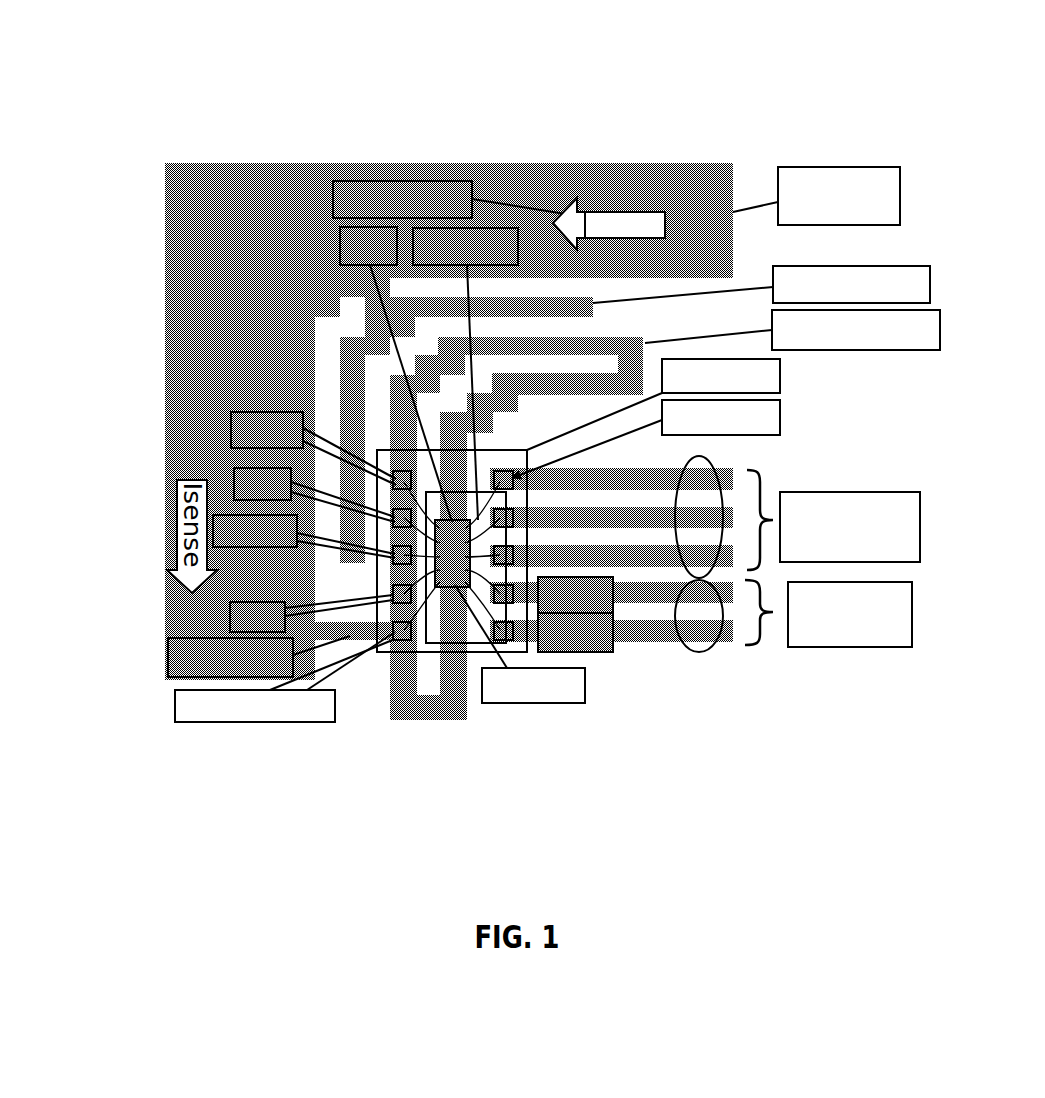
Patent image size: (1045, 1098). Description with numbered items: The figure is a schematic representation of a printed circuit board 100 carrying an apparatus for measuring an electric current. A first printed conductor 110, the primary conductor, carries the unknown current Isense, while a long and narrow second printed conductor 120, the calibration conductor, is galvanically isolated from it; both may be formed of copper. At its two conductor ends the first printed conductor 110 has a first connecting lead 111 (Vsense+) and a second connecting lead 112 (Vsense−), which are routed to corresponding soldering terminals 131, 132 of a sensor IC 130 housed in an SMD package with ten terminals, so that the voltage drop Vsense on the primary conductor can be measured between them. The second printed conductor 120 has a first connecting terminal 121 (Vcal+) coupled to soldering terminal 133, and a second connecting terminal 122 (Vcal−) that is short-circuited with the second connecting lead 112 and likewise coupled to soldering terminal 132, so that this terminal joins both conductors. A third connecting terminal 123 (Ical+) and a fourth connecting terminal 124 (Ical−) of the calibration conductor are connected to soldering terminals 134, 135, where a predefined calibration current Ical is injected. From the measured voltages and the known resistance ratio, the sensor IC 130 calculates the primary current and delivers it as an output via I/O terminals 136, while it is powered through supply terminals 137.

The printed circuit board 100 is at (449, 74).
The first printed conductor 110 is at (231, 266).
The first connecting lead 111 is at (880, 266).
The second connecting lead 112 is at (168, 660).
The second printed conductor 120 is at (880, 352).
The first connecting terminal 121 is at (231, 428).
The second connecting terminal 122 is at (267, 722).
The third connecting terminal 123 is at (234, 484).
The fourth connecting terminal 124 is at (230, 617).
The sensor IC 130 is at (430, 639).
The soldering terminal 131 is at (213, 531).
The soldering terminal 132 is at (402, 631).
The soldering terminal 133 is at (402, 480).
The soldering terminal 134 is at (402, 518).
The soldering terminal 135 is at (402, 594).
The I/O terminals 136 is at (720, 470).
The supply terminals 137 is at (705, 650).